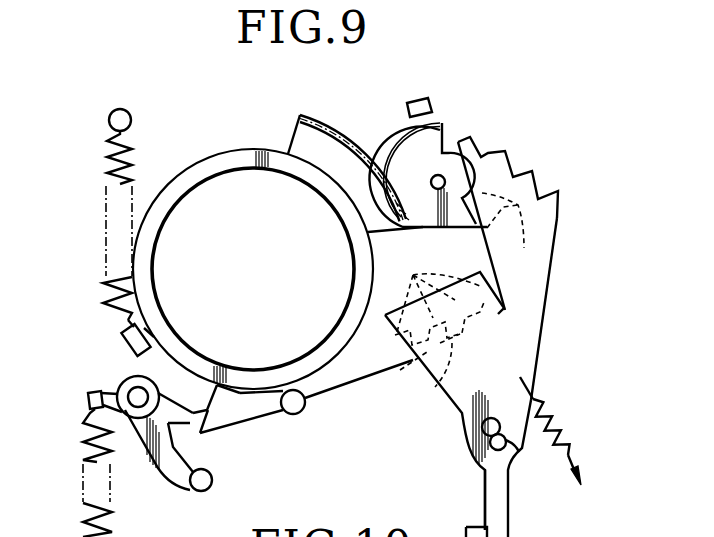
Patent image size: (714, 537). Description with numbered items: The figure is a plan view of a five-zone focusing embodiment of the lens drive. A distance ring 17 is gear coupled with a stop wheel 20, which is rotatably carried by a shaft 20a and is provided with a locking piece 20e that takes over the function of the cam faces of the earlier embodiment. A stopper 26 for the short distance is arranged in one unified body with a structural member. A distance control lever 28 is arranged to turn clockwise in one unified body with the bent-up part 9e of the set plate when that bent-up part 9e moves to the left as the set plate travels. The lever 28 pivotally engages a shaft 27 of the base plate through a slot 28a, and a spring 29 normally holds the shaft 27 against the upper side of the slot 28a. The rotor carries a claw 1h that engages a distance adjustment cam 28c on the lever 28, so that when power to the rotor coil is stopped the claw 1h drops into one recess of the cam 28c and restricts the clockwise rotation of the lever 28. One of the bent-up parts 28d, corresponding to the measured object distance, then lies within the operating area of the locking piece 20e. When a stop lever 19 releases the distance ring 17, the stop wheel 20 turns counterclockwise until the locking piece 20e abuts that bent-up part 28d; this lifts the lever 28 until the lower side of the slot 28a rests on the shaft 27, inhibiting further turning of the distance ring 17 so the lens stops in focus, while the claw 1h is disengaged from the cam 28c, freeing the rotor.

The distance ring 17 is at (226, 157).
The stop wheel 20 is at (432, 142).
The shaft 20a is at (431, 180).
The locking piece 20e is at (510, 235).
The stopper 26 is at (410, 103).
The distance control lever 28 is at (522, 337).
The slot 28a is at (508, 440).
The distance adjustment cam 28c is at (444, 306).
The bent-up parts 28d is at (554, 192).
The spring 29 is at (548, 410).
The shaft 27 is at (482, 428).
The claw 1h is at (425, 387).
The bent-up part 9e is at (466, 530).
The stop lever 19 is at (131, 383).